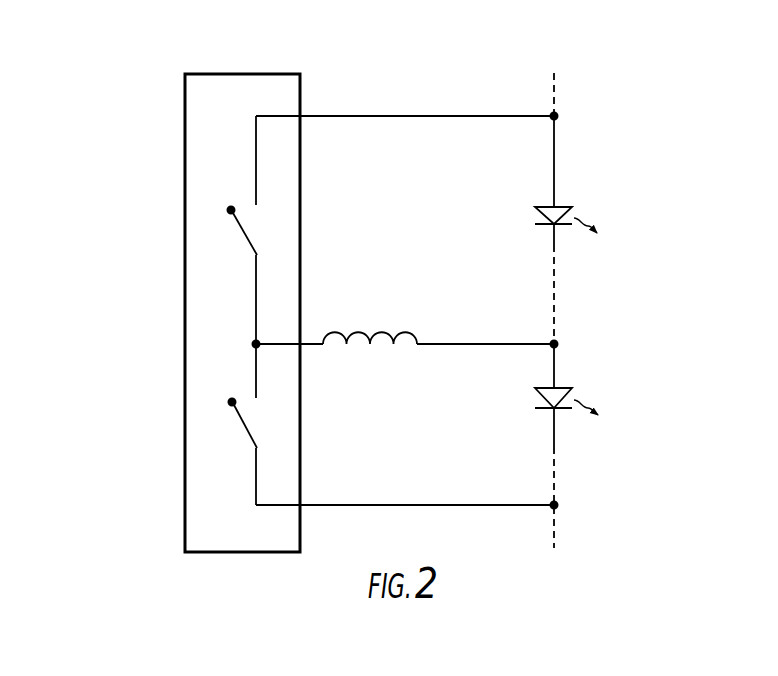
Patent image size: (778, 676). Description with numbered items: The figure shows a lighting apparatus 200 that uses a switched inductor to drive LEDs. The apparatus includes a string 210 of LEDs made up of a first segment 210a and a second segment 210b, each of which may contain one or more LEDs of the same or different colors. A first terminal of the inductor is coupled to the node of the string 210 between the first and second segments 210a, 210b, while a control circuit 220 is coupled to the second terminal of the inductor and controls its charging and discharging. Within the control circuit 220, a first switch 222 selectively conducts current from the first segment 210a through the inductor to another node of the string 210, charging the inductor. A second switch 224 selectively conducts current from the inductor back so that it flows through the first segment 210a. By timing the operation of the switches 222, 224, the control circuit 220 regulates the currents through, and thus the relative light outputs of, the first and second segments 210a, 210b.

The lighting apparatus 200 is at (83, 102).
The string of LEDs 210 is at (608, 80).
The first segment 210a is at (588, 205).
The second segment 210b is at (610, 395).
The control circuit 220 is at (238, 74).
The first switch 222 is at (240, 423).
The second switch 224 is at (240, 230).